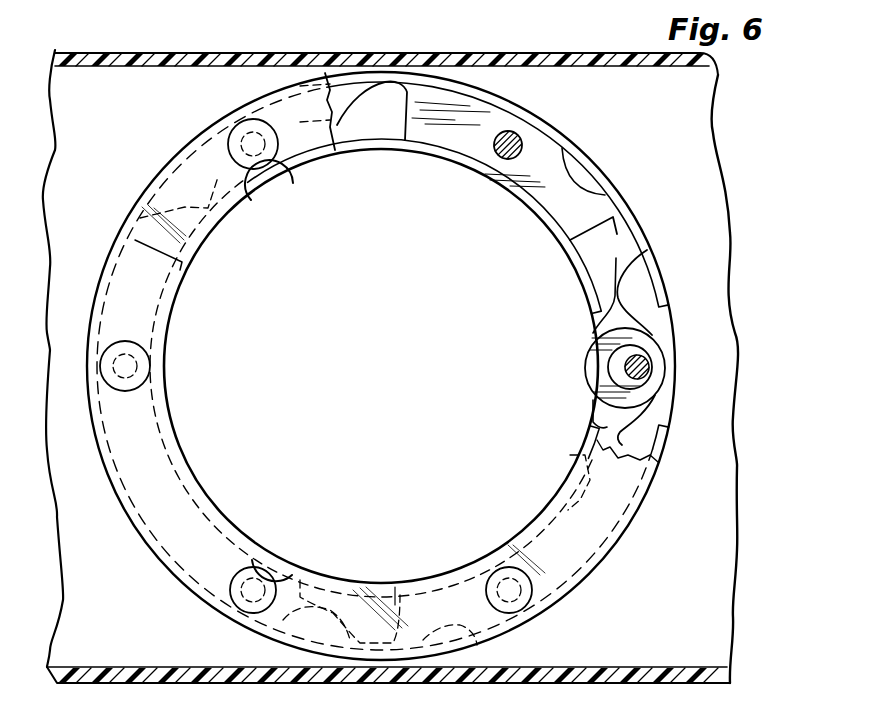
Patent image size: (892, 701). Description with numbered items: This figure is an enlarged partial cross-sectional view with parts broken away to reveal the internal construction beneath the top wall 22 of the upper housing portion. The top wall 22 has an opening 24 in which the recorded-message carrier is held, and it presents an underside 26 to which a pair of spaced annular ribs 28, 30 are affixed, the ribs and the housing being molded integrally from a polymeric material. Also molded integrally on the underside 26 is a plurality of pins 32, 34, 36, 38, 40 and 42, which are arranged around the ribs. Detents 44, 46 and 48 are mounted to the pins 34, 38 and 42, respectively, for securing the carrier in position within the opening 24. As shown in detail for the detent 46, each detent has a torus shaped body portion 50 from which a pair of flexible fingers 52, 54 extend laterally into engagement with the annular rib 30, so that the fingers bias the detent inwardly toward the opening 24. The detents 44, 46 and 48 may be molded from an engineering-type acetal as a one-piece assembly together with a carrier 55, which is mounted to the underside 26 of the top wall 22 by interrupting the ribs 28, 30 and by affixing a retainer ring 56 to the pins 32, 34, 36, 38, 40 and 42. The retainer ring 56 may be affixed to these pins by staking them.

The top wall 22 is at (710, 487).
The opening 24 is at (210, 477).
The underside 26 is at (698, 603).
The annular rib 28 is at (585, 303).
The annular rib 30 is at (650, 280).
The pin 32 is at (140, 375).
The pin 34 is at (240, 130).
The pin 36 is at (516, 147).
The pin 38 is at (624, 363).
The pin 40 is at (517, 603).
The pin 42 is at (240, 590).
The detent 44 is at (289, 202).
The detent 46 is at (583, 382).
The detent 48 is at (303, 510).
The torus shaped body portion 50 is at (630, 340).
The flexible finger 52 is at (624, 260).
The flexible finger 54 is at (617, 428).
The carrier 55 is at (467, 143).
The retainer ring 56 is at (613, 543).